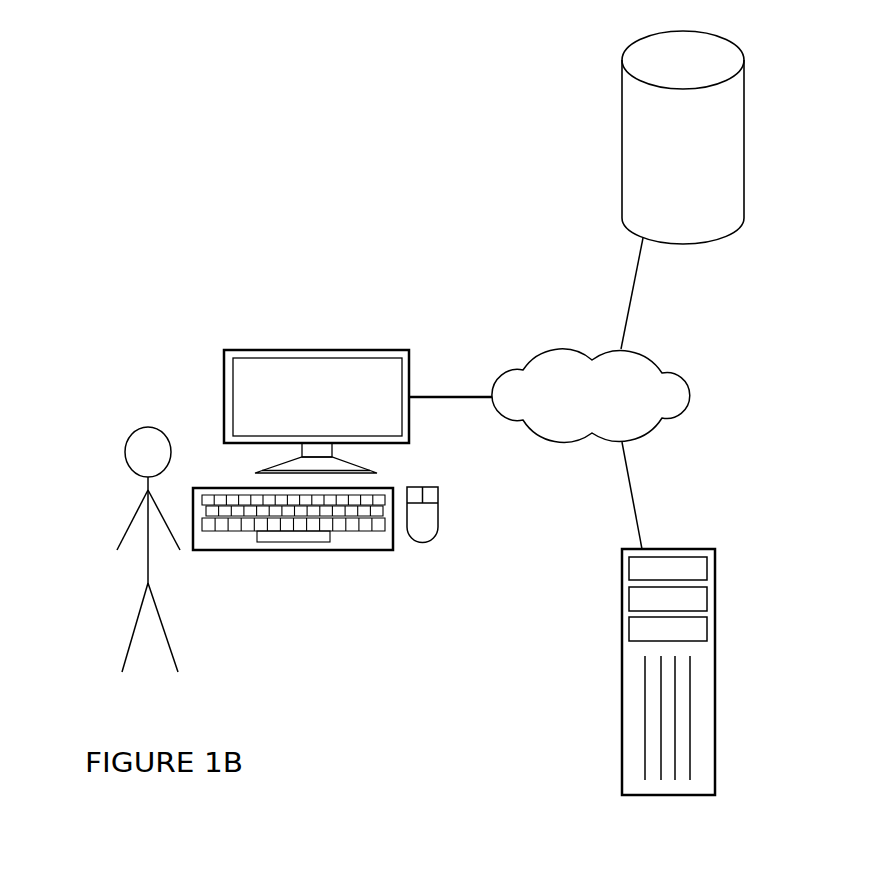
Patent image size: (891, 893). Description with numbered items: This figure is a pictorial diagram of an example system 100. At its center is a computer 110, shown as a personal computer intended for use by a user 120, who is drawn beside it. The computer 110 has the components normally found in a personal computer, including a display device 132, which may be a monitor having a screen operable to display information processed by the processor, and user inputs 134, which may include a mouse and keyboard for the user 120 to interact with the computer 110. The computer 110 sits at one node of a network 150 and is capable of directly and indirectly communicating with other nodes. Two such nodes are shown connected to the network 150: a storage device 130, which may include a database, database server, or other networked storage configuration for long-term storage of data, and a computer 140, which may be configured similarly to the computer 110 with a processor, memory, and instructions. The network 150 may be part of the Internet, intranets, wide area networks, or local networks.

The system 100 is at (181, 726).
The computer 110 is at (324, 406).
The user 120 is at (153, 598).
The storage device 130 is at (745, 153).
The display device 132 is at (224, 396).
The user inputs 134 is at (313, 550).
The computer 140 is at (715, 673).
The network 150 is at (523, 422).